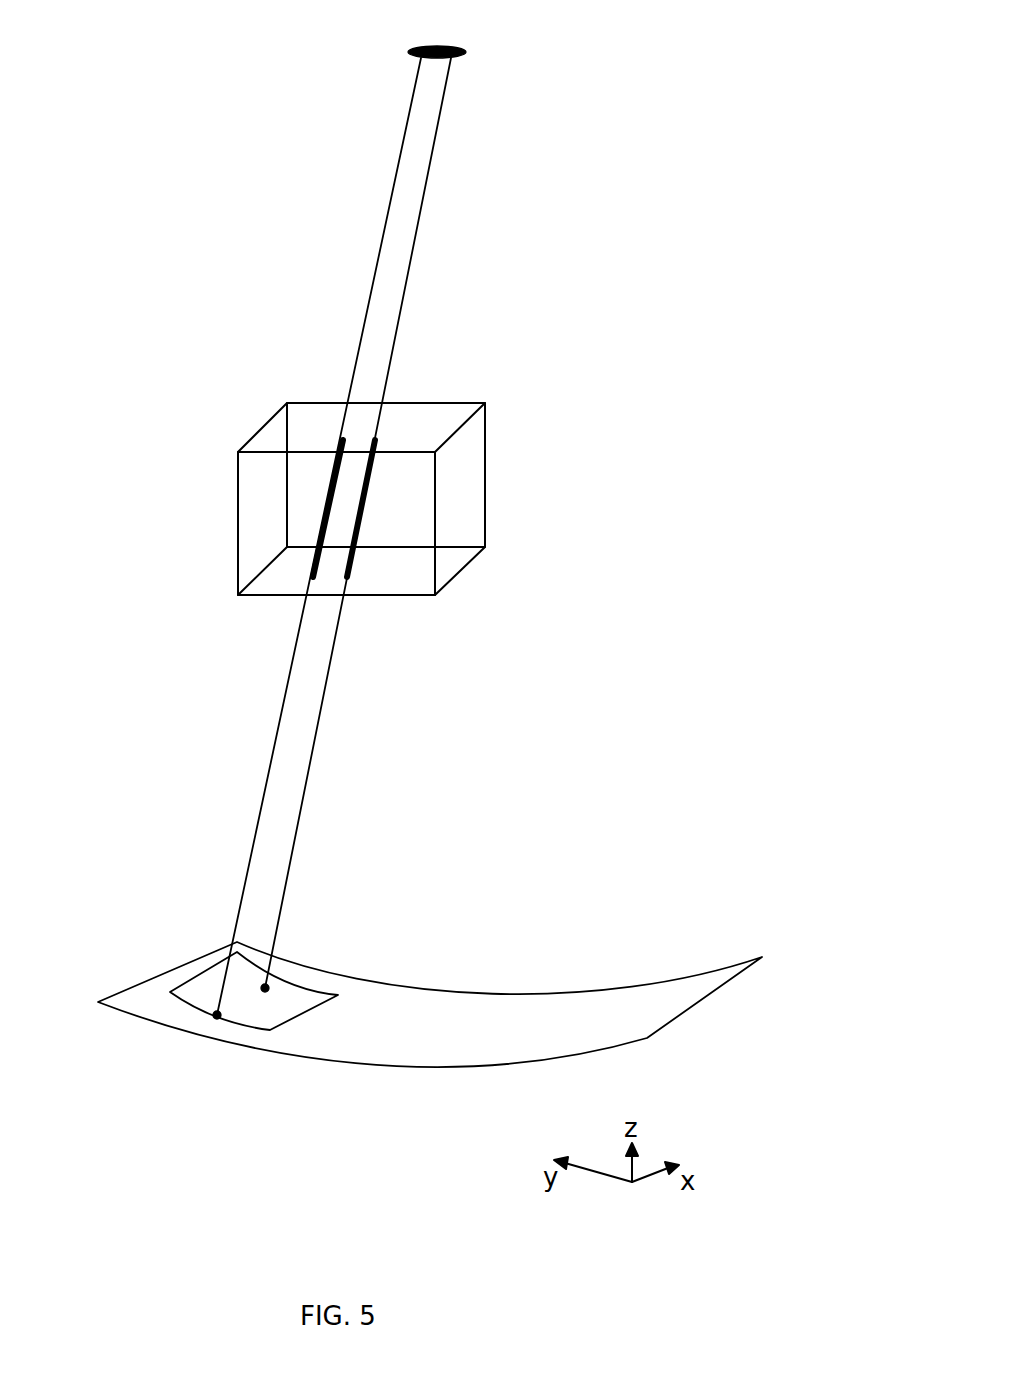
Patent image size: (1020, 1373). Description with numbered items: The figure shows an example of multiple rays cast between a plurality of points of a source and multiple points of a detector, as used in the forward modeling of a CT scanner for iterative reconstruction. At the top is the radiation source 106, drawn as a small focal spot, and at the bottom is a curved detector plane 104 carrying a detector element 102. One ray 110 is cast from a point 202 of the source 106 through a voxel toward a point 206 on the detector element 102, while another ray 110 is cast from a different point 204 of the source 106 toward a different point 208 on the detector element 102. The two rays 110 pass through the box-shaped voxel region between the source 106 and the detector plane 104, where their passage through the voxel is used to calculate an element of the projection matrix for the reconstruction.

The detector element 102 is at (260, 1015).
The detector plane 104 is at (693, 1008).
The radiation source 106 is at (447, 47).
The ray 110 is at (392, 536).
The point of source 202 is at (422, 62).
The point of source 204 is at (453, 62).
The point on detector element 206 is at (168, 990).
The point on detector element 208 is at (267, 985).